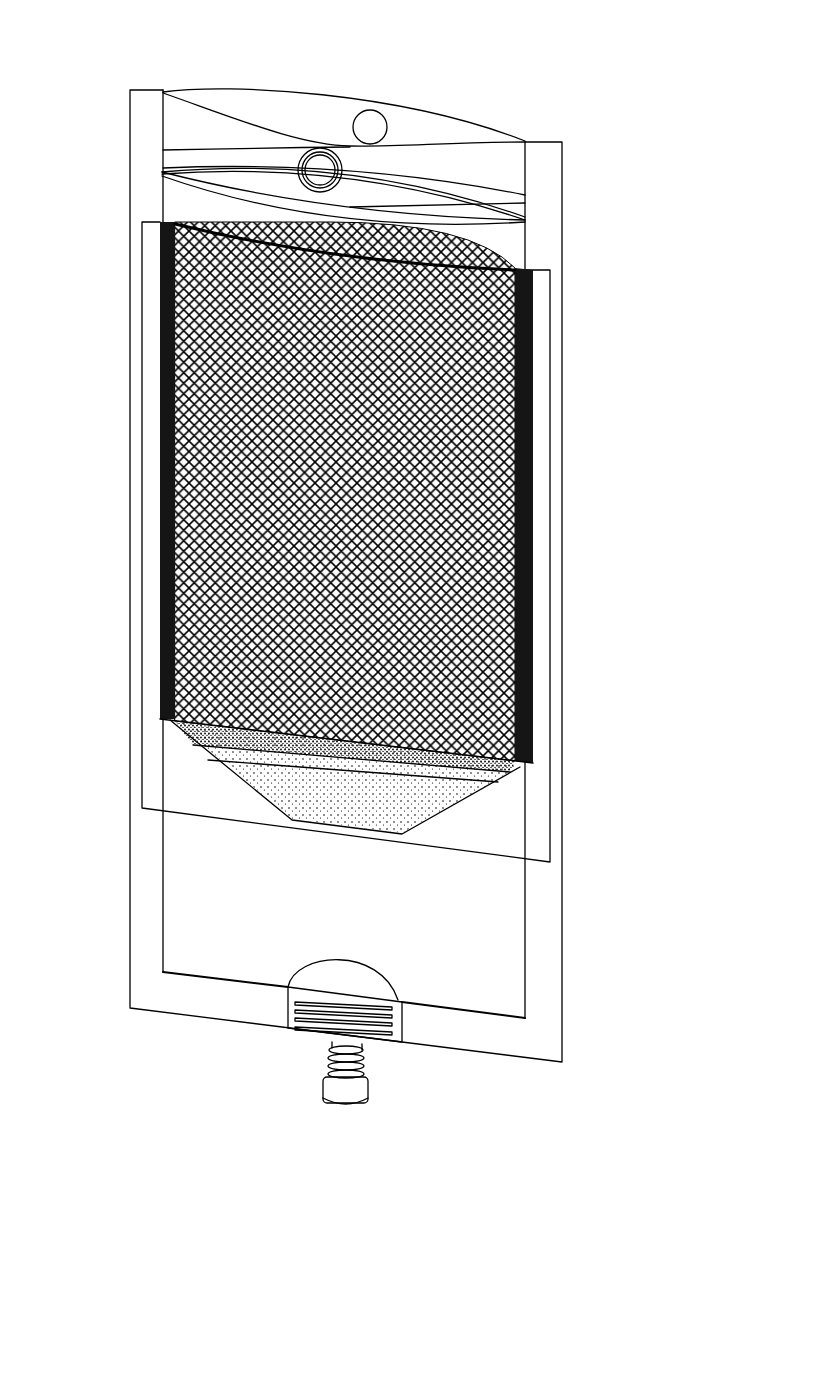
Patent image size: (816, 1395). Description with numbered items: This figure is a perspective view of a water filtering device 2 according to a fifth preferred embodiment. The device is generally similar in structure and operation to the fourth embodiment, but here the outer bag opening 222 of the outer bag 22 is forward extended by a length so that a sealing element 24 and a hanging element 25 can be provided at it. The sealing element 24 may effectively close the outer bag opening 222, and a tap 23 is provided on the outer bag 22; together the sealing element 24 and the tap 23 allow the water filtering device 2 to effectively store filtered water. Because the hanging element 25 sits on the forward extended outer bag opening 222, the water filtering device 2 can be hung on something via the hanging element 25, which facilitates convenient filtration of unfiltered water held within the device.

The water filtering device 2 is at (700, 113).
The outer bag 22 is at (170, 92).
The outer bag opening 222 is at (493, 228).
The tap 23 is at (345, 1093).
The sealing element 24 is at (423, 227).
The hanging element 25 is at (322, 158).